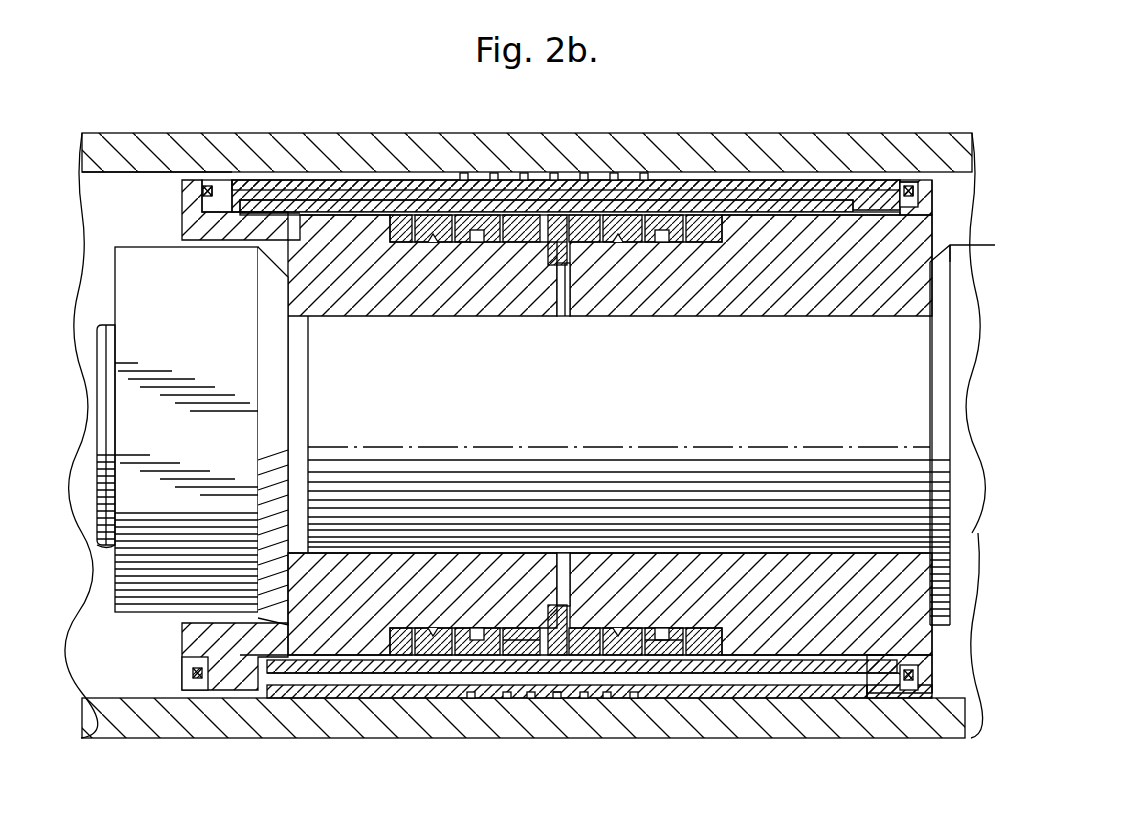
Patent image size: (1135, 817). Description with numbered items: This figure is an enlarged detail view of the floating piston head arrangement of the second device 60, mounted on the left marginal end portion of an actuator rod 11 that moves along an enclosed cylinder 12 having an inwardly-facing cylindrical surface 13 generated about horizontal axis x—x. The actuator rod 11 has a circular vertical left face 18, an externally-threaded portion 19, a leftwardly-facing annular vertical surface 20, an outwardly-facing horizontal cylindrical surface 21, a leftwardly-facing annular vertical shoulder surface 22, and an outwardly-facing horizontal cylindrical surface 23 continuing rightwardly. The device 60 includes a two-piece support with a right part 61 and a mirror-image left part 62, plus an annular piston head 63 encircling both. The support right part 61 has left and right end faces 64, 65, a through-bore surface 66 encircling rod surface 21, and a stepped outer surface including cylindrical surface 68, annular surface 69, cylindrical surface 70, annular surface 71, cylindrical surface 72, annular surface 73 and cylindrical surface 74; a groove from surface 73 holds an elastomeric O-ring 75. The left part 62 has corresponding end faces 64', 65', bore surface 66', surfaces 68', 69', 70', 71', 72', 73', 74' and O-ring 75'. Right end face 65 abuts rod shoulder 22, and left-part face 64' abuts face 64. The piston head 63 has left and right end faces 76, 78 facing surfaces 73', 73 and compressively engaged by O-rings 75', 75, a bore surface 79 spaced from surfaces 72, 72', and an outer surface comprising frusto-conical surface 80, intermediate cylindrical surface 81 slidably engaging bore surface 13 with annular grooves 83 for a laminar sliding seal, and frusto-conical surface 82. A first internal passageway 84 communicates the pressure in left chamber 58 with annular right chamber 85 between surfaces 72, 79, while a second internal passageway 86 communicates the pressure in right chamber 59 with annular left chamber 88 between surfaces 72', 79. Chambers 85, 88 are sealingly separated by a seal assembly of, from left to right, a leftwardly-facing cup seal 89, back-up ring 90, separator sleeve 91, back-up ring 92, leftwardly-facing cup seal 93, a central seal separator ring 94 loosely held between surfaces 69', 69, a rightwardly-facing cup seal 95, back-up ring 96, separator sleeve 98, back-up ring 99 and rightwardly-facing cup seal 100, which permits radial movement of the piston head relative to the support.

The actuator rod 11 is at (992, 132).
The enclosed cylinder 12 is at (521, 399).
The inwardly-facing cylindrical surface 13 is at (84, 180).
The circular vertical left face 18 is at (98, 484).
The externally-threaded portion 19 is at (98, 563).
The leftwardly-facing annular vertical surface 20 is at (303, 318).
The outwardly-facing horizontal cylindrical surface 21 is at (339, 556).
The leftwardly-facing annular vertical shoulder surface 22 is at (928, 295).
The outwardly-facing horizontal cylindrical surface 23 is at (962, 225).
The left chamber 58 is at (92, 435).
The right chamber 59 is at (958, 635).
The second device 60 is at (102, 132).
The support right part 61 is at (751, 297).
The support left part 62 is at (422, 304).
The piston head 63 is at (540, 172).
The left end face 64 is at (535, 312).
The right end face of support left part 64' is at (585, 309).
The right end face 65 is at (915, 171).
The left end face of support left part 65' is at (206, 165).
The inwardly-facing cylindrical surface 66 is at (751, 285).
The inwardly-facing cylindrical surface of support left part 66' is at (422, 285).
The outwardly-facing horizontal cylindrical surface 68 is at (588, 268).
The outwardly-facing horizontal cylindrical surface of support left part 68' is at (529, 254).
The leftwardly-facing annular vertical surface 69 is at (605, 245).
The annular vertical surface of support left part 69' is at (500, 245).
The outwardly-facing horizontal cylindrical surface 70 is at (667, 245).
The outwardly-facing horizontal cylindrical surface of support left part 70' is at (447, 245).
The leftwardly-facing annular vertical surface 71 is at (726, 233).
The annular vertical surface of support left part 71' is at (375, 233).
The outwardly-facing horizontal cylindrical surface 72 is at (570, 231).
The outwardly-facing horizontal cylindrical surface of support left part 72' is at (286, 232).
The leftwardly-facing annular vertical surface 73 is at (899, 219).
The annular vertical surface of support left part 73' is at (169, 200).
The outwardly-facing horizontal cylindrical surface 74 is at (924, 143).
The outwardly-facing horizontal cylindrical surface of support left part 74' is at (199, 143).
The elastomeric O-ring 75 is at (889, 139).
The elastomeric O-ring of support left part 75' is at (240, 143).
The left end face 76 is at (190, 671).
The right end face 78 is at (913, 673).
The inwardly-facing horizontal cylindrical surface 79 is at (350, 655).
The frusto-conical surface 80 is at (269, 698).
The intermediate outwardly-facing horizontal cylindrical surface 81 is at (515, 698).
The frusto-conical surface 82 is at (815, 698).
The annular grooves 83 is at (555, 698).
The first internal passageway 84 is at (759, 180).
The annular right chamber 85 is at (860, 213).
The second internal passageway 86 is at (615, 690).
The annular left chamber 88 is at (313, 657).
The leftwardly-facing cup seal 89 is at (395, 628).
The back-up ring 90 is at (430, 628).
The separator sleeve 91 is at (468, 628).
The back-up ring 92 is at (500, 628).
The leftwardly-facing cup seal 93 is at (530, 640).
The central seal separator ring 94 is at (552, 605).
The rightwardly-facing cup seal 95 is at (577, 628).
The back-up ring 96 is at (608, 632).
The separator sleeve 98 is at (642, 628).
The back-up ring 99 is at (670, 632).
The rightwardly-facing cup seal 100 is at (707, 628).